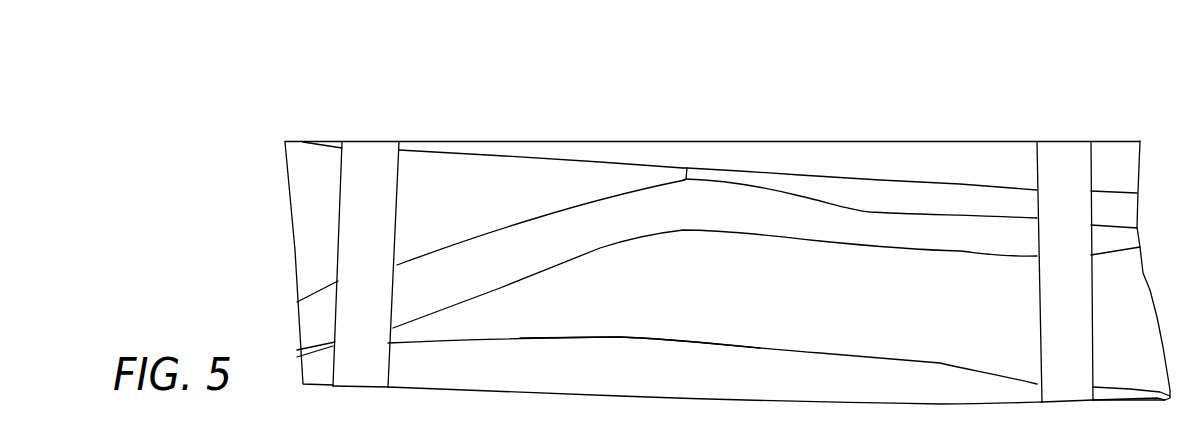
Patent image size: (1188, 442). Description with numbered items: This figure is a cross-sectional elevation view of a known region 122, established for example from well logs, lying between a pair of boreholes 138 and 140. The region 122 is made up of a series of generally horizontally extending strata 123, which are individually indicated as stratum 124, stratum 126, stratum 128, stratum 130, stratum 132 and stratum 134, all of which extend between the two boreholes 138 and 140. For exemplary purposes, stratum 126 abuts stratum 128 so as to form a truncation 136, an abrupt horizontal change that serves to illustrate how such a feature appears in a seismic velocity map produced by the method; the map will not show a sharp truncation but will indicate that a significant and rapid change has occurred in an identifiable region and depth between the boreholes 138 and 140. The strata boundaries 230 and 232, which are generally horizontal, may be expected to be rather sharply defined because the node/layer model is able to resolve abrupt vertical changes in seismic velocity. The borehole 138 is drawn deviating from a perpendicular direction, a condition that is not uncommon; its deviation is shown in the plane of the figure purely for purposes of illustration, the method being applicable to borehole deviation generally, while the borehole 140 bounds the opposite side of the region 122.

The known region 122 is at (875, 141).
The strata 123 is at (763, 162).
The stratum 124 is at (937, 172).
The stratum 126 is at (442, 207).
The stratum 128 is at (883, 211).
The stratum 130 is at (945, 247).
The stratum 132 is at (942, 315).
The stratum 134 is at (913, 397).
The truncation 136 is at (682, 172).
The borehole 138 is at (376, 167).
The borehole 140 is at (1063, 141).
The strata boundary 230 is at (505, 156).
The strata boundary 232 is at (630, 338).